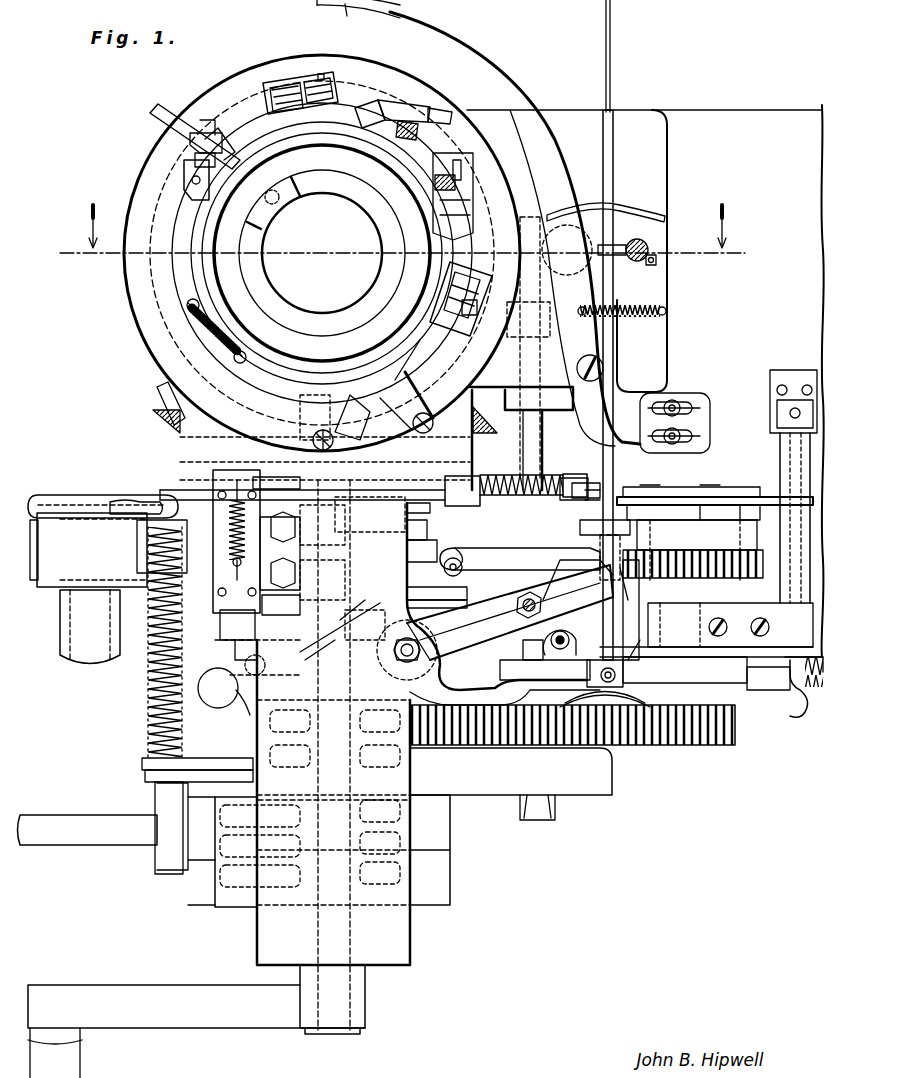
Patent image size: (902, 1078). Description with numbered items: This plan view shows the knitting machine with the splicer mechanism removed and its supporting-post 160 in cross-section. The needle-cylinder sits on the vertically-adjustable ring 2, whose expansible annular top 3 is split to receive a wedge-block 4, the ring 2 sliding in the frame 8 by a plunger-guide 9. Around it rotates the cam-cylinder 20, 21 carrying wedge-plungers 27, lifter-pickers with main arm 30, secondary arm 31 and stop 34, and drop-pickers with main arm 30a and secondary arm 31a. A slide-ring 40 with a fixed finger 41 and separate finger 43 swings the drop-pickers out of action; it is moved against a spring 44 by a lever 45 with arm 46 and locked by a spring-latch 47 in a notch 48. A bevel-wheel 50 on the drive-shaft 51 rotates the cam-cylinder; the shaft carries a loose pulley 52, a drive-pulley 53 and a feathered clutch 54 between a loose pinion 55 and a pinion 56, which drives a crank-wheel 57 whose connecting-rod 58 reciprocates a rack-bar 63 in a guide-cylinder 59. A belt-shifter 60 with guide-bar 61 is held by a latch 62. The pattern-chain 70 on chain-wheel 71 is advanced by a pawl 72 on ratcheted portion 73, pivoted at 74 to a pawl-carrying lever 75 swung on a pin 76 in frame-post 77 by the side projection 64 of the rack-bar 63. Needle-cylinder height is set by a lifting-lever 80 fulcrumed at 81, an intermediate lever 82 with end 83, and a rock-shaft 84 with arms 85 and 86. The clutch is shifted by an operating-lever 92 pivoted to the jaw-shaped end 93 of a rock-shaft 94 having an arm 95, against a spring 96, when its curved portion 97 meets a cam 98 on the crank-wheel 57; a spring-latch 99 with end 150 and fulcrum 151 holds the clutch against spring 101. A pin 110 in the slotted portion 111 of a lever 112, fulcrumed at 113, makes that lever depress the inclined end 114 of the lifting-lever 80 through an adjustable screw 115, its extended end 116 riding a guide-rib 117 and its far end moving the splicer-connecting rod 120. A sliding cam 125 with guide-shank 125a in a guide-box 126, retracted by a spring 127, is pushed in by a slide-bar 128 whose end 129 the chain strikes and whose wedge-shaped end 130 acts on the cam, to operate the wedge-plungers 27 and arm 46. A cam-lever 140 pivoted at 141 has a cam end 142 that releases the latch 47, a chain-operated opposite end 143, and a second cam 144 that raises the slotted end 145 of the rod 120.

The vertically-adjustable ring 2 is at (544, 945).
The expansible annular top 3 is at (34, 444).
The wedge-block 4 is at (402, 222).
The frame 8 is at (133, 200).
The plunger-guide 9 is at (548, 232).
The cam-cylinder 20 is at (208, 247).
The cam-cylinder 21 is at (209, 220).
The wedge-plungers 27 is at (432, 405).
The main arm 30 is at (400, 104).
The main arm 30a is at (315, 82).
The secondary arm 31 is at (365, 106).
The secondary arm 31a is at (278, 95).
The stop 34 is at (425, 120).
The slide-ring 40 is at (184, 182).
The fixed finger 41 is at (235, 105).
The separate finger 43 is at (455, 325).
The spring 44 is at (255, 318).
The engaging lever 45 is at (378, 398).
The arm 46 is at (400, 440).
The spring-latch 47 is at (188, 136).
The notch 48 is at (195, 158).
The bevel-wheel 50 is at (153, 412).
The drive-shaft 51 is at (322, 1034).
The loose pulley 52 is at (222, 900).
The drive-pulley 53 is at (215, 830).
The feathered clutch 54 is at (257, 655).
The loose pinion 55 is at (362, 530).
The pinion 56 is at (300, 730).
The crank-wheel 57 is at (672, 745).
The connecting-rod 58 is at (123, 592).
The guide-cylinder 59 is at (92, 550).
The belt-shifter 60 is at (172, 865).
The guide-bar 61 is at (150, 724).
The spring-lifted latch 62 is at (104, 495).
The rack-bar 63 is at (36, 540).
The side projection 64 is at (281, 610).
The pattern-chain 70 is at (765, 494).
The chain-wheel 71 is at (723, 486).
The pawl 72 is at (520, 563).
The ratcheted portion 73 is at (670, 560).
The pivot 74 is at (456, 558).
The pawl-carrying lever 75 is at (468, 594).
The pin 76 is at (497, 596).
The frame-post 77 is at (437, 556).
The lifting-lever 80 is at (530, 440).
The fulcrum 81 is at (535, 330).
The intermediate lever 82 is at (706, 630).
The end 83 is at (560, 630).
The rock-shaft 84 is at (790, 590).
The arm 85 is at (739, 628).
The arm 86 is at (775, 508).
The operating-lever 92 is at (539, 667).
The jaw-shaped end 93 is at (628, 688).
The rock-shaft 94 is at (633, 625).
The arm 95 is at (588, 528).
The spring 96 is at (807, 687).
The laterally-curved portion 97 is at (445, 695).
The cam 98 is at (605, 697).
The spring-latch 99 is at (139, 502).
The spring 101 is at (337, 552).
The projecting pin 110 is at (265, 673).
The slotted portion 111 is at (372, 630).
The lever 112 is at (510, 612).
The fulcrum 113 is at (420, 650).
The outer end 114 is at (532, 642).
The adjustable screw 115 is at (517, 610).
The extended end 116 is at (224, 691).
The guide-rib 117 is at (257, 650).
The splicer-connecting rod 120 is at (614, 170).
The cam 125 is at (158, 390).
The guide-shank 125a is at (217, 625).
The guide-box 126 is at (278, 551).
The spring 127 is at (229, 540).
The slide-bar 128 is at (350, 492).
The slide-bar end 129 is at (596, 478).
The wedge-shaped end 130 is at (276, 486).
The cam-lever 140 is at (502, 70).
The pivot 141 is at (618, 343).
The cam end 142 is at (330, 10).
The opposite end 143 is at (690, 455).
The second cam 144 is at (620, 208).
The slotted end 145 is at (611, 56).
The end 150 is at (695, 550).
The fulcrum 151 is at (495, 508).
The supporting-post 160 is at (628, 262).